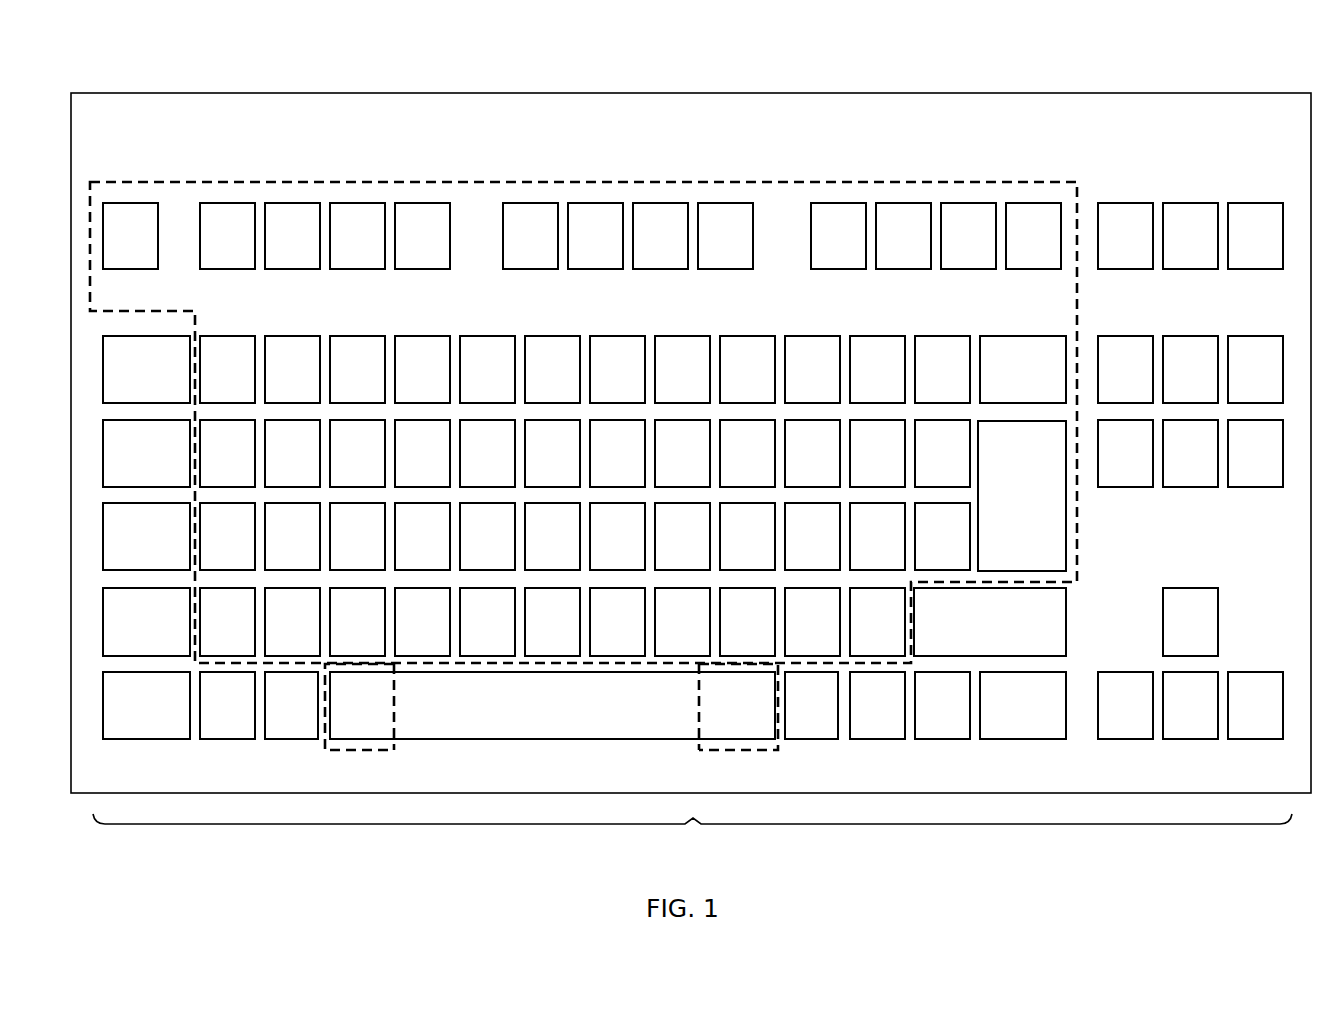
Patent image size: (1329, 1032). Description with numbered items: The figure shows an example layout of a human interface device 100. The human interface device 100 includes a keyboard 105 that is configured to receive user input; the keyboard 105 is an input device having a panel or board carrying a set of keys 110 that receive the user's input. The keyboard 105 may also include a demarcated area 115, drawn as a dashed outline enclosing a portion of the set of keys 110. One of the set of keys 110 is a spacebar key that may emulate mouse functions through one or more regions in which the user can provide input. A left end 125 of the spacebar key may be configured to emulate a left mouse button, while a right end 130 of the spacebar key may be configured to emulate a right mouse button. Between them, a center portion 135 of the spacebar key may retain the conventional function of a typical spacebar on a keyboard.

The human interface device 100 is at (151, 74).
The keyboard 105 is at (692, 93).
The set of keys 110 is at (692, 836).
The demarcated area 115 is at (865, 182).
The left end 125 is at (362, 750).
The right end 130 is at (767, 750).
The center portion 135 is at (497, 750).